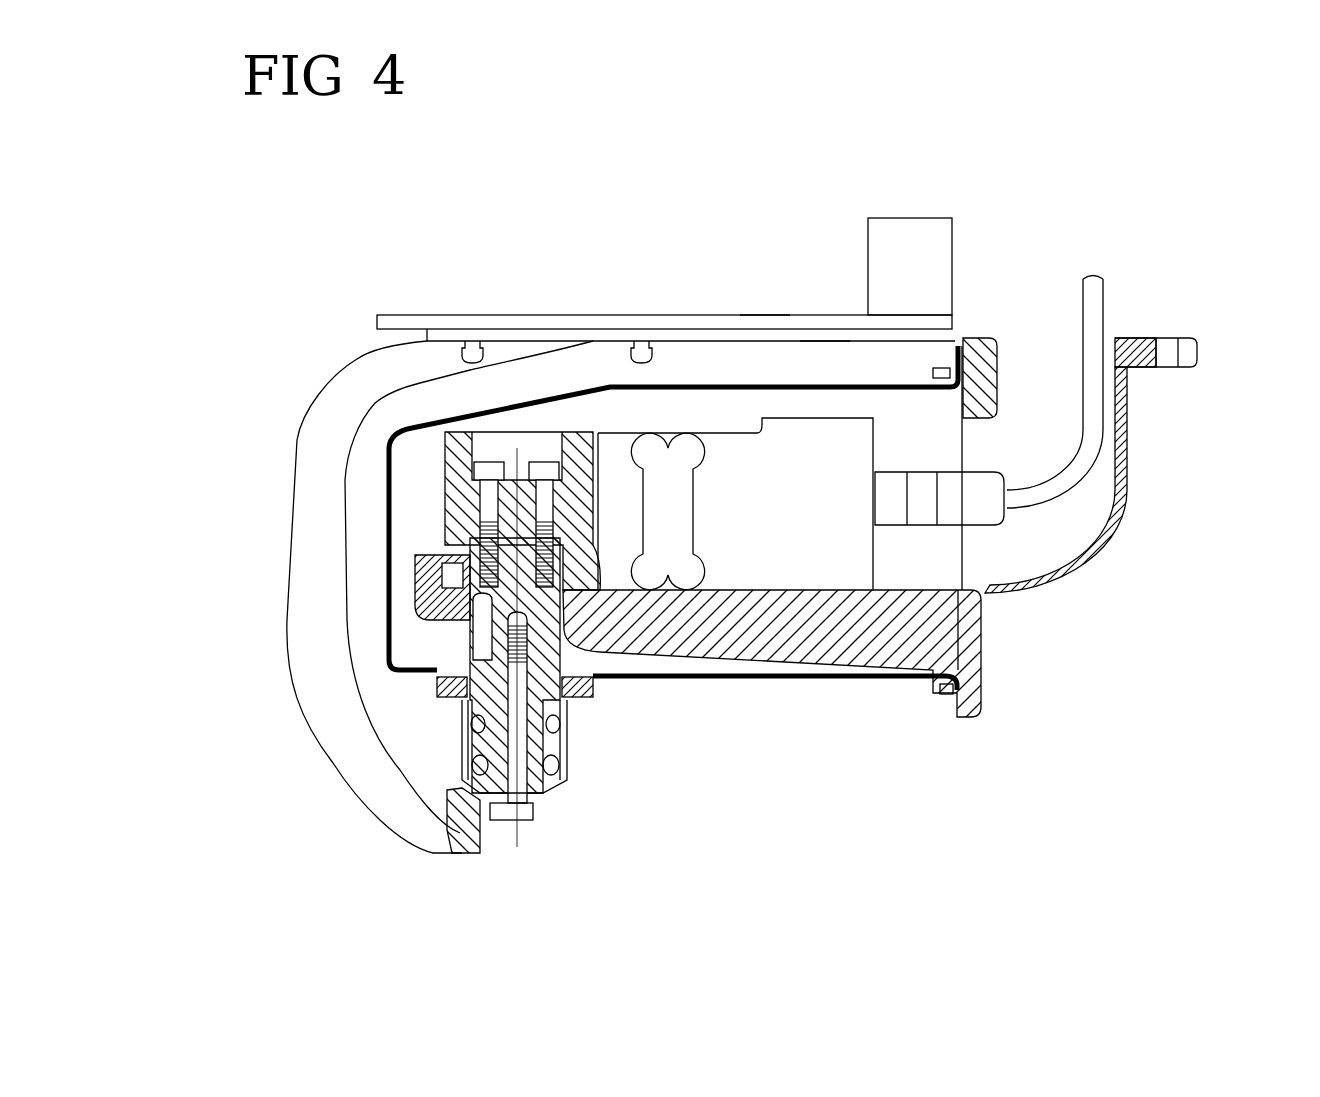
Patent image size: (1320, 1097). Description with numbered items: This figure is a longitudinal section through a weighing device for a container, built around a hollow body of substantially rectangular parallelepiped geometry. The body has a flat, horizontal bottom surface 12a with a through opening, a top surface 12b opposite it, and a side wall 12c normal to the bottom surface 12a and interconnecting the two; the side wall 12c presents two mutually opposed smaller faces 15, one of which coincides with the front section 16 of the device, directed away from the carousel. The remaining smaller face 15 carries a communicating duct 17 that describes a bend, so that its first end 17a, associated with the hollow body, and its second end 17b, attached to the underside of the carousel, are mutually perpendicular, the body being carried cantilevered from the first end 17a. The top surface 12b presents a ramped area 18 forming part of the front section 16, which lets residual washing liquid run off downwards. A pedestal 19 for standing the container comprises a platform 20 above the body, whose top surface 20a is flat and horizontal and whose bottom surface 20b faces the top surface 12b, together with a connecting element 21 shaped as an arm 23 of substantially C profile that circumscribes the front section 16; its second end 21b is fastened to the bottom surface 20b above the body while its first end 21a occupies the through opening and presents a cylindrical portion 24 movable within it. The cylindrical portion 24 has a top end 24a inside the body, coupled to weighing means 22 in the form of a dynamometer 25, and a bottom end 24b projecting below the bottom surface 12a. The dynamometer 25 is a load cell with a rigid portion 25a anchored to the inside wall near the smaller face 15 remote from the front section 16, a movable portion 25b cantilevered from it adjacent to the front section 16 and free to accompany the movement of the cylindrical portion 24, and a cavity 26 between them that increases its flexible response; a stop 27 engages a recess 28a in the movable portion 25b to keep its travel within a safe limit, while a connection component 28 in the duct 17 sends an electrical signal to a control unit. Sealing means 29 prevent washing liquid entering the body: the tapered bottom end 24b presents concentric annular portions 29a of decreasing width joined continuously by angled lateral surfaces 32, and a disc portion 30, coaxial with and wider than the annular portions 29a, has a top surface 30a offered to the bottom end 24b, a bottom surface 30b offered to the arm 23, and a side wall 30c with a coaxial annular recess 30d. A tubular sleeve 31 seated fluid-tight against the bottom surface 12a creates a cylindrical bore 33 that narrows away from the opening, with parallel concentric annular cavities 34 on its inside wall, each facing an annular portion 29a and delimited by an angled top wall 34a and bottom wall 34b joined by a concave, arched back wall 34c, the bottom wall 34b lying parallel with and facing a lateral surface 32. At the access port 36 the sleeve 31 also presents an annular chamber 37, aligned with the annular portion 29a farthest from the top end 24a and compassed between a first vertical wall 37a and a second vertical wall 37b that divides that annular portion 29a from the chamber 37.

The bottom surface 12a is at (900, 680).
The top surface 12b is at (713, 382).
The side wall 12c is at (387, 600).
The smaller face 15 is at (403, 530).
The front section 16 is at (377, 463).
The communicating duct 17 is at (1110, 538).
The first end 17a is at (983, 640).
The second end 17b is at (1125, 340).
The ramped area 18 is at (540, 398).
The pedestal 19 is at (378, 309).
The platform 20 is at (863, 243).
The block upper surface 20a is at (762, 315).
The bottom surface 20b is at (825, 341).
The connecting element 21 is at (277, 683).
The first end 21a is at (427, 840).
The second end 21b is at (403, 367).
The weighing means 22 is at (930, 682).
The arm 23 is at (313, 483).
The cylindrical portion 24 is at (466, 667).
The top end 24a is at (598, 557).
The bottom end 24b is at (573, 777).
The dynamometer 25 is at (833, 580).
The rigid portion 25a is at (863, 447).
The movable portion 25b is at (608, 440).
The cavity 26 is at (687, 519).
The stop 27 is at (767, 640).
The connection component 28 is at (990, 483).
The recess 28a is at (418, 554).
The sealing means 29 is at (578, 790).
The annular portions 29a is at (440, 688).
The disc portion 30 is at (553, 797).
The top surface 30a is at (460, 767).
The bottom surface 30b is at (540, 813).
The side wall 30c is at (447, 797).
The annular recess 30d is at (453, 820).
The sleeve 31 is at (600, 780).
The lateral surfaces 32 is at (567, 742).
The cylindrical bore 33 is at (460, 743).
The annular cavities 34 is at (437, 697).
The top wall 34a is at (570, 703).
The bottom wall 34b is at (458, 660).
The back wall 34c is at (583, 690).
The access port 36 is at (462, 858).
The annular chamber 37 is at (477, 830).
The first vertical wall 37a is at (563, 755).
The second vertical wall 37b is at (585, 812).